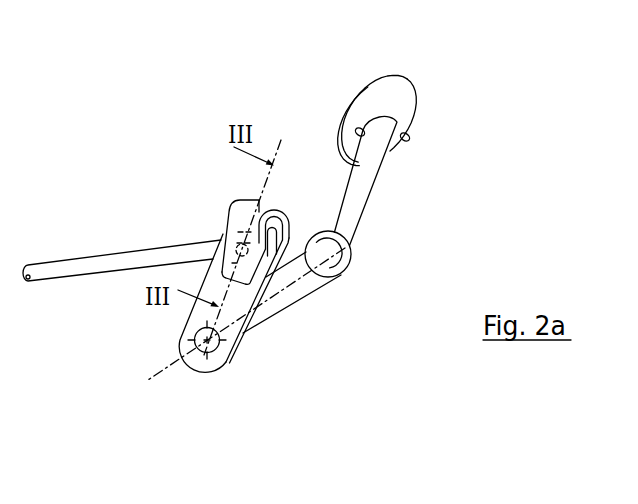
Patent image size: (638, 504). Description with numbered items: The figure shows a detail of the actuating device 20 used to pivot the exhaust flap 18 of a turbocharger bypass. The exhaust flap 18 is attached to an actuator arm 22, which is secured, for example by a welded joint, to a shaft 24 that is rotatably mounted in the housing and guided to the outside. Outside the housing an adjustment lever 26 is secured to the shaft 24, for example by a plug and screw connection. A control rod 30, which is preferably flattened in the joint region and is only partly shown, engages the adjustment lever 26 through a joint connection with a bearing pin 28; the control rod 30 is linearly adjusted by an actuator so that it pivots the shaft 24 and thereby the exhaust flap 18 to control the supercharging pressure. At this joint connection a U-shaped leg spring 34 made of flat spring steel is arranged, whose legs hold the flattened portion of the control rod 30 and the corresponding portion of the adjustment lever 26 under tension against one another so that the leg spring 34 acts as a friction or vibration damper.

The exhaust flap 18 is at (366, 88).
The actuating device 20 is at (203, 171).
The actuator arm 22 is at (376, 190).
The shaft 24 is at (305, 295).
The adjustment lever 26 is at (243, 332).
The bearing pin 28 is at (237, 248).
The control rod 30 is at (60, 268).
The leg spring 34 is at (282, 204).